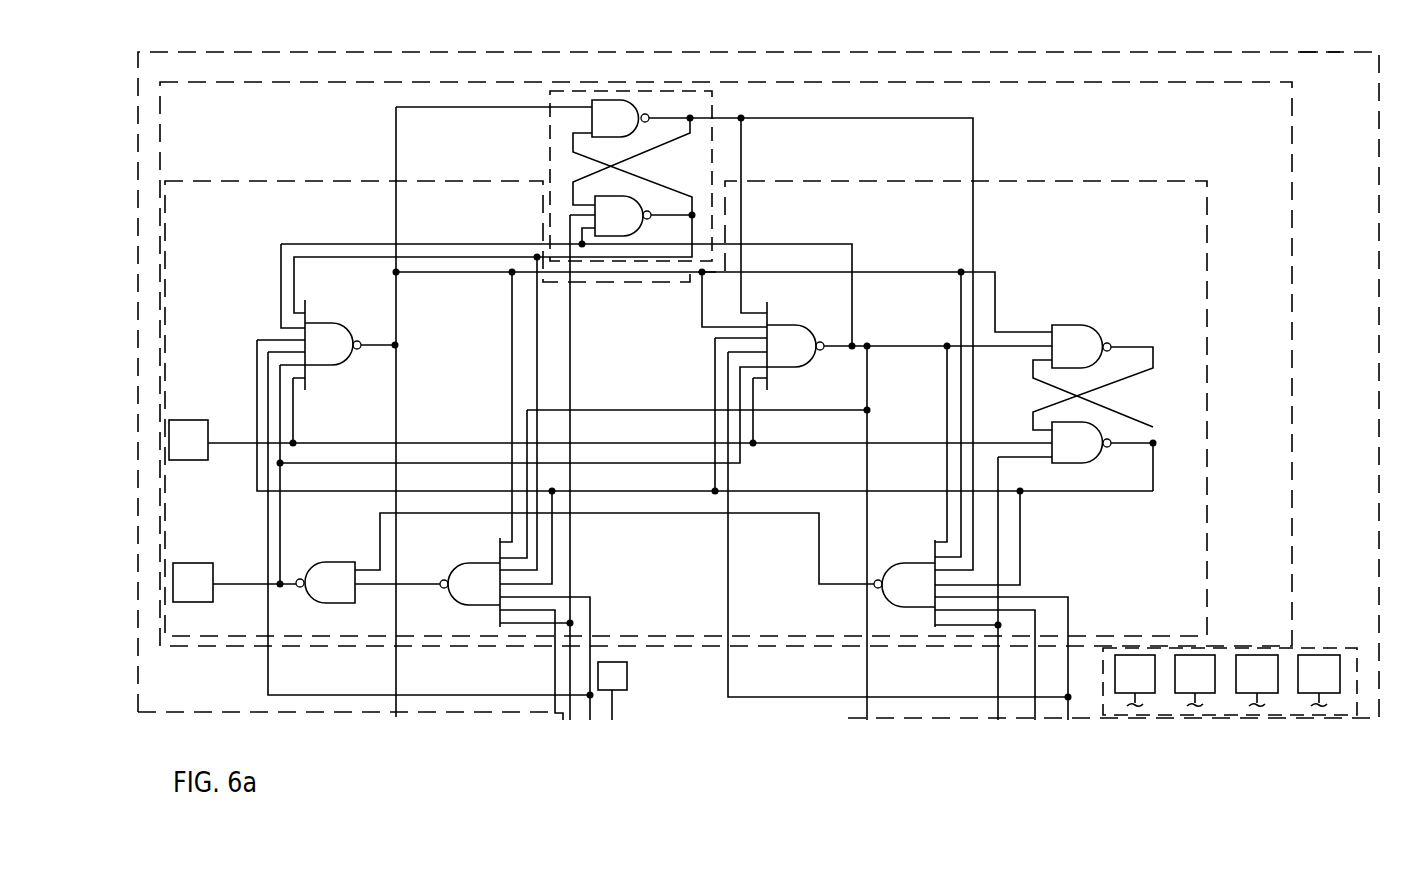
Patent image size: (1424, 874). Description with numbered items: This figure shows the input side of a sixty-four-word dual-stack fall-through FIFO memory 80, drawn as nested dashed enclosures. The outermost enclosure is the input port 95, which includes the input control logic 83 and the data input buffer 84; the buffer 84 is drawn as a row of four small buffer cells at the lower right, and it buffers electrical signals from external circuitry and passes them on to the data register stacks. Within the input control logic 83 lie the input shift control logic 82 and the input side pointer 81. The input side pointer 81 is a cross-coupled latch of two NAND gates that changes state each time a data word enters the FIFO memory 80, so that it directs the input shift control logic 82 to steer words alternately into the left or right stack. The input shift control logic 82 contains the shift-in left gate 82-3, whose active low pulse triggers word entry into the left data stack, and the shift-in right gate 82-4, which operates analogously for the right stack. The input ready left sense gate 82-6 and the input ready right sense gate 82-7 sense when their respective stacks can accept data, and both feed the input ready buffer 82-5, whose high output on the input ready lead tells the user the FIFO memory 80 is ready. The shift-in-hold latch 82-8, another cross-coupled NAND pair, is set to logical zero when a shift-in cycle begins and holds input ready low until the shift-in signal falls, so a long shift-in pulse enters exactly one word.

The input port 95 is at (1316, 52).
The FIFO memory 80 is at (1390, 119).
The input control logic 83 is at (726, 364).
The input shift control logic 82 is at (686, 408).
The input side pointer 81 is at (631, 176).
The data input buffer 84 is at (1350, 686).
The shift-in left gate 82-3 is at (342, 326).
The shift-in right gate 82-4 is at (801, 326).
The input ready buffer 82-5 is at (347, 531).
The input ready left sense gate 82-6 is at (475, 538).
The input ready right sense gate 82-7 is at (918, 540).
The shift-in-hold latch 82-8 is at (1102, 331).